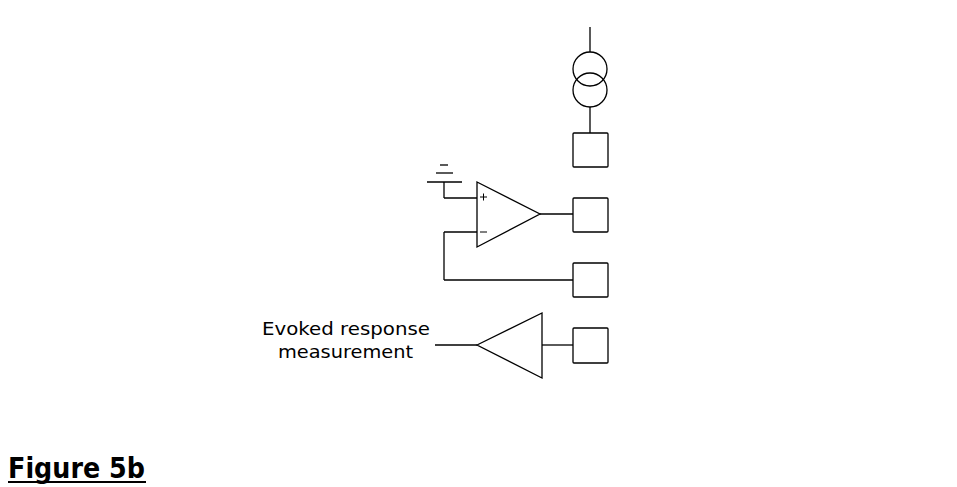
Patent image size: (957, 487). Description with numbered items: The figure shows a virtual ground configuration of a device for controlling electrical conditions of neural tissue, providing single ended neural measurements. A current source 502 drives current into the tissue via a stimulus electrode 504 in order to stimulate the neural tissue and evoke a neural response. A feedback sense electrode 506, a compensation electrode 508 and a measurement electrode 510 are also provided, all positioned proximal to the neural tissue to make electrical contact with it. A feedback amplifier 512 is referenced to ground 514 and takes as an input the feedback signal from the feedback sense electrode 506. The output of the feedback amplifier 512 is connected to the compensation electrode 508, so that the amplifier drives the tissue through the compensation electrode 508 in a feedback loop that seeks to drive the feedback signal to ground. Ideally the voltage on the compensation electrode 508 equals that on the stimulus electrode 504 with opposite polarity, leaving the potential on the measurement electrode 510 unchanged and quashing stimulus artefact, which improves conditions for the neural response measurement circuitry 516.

The current source 502 is at (618, 70).
The stimulus electrode 504 is at (618, 150).
The feedback sense electrode 506 is at (614, 280).
The compensation electrode 508 is at (614, 213).
The measurement electrode 510 is at (614, 350).
The feedback amplifier 512 is at (499, 177).
The ground 514 is at (416, 166).
The neural response measurement circuitry 516 is at (518, 368).